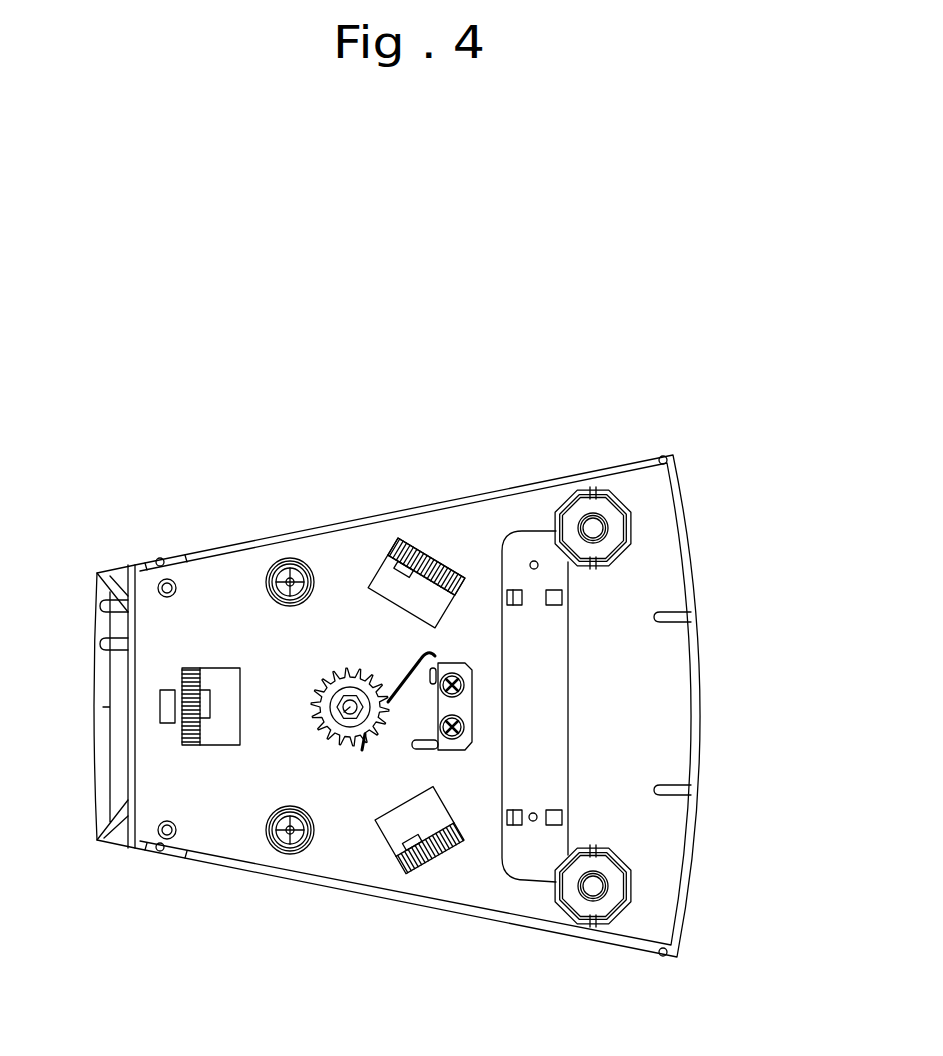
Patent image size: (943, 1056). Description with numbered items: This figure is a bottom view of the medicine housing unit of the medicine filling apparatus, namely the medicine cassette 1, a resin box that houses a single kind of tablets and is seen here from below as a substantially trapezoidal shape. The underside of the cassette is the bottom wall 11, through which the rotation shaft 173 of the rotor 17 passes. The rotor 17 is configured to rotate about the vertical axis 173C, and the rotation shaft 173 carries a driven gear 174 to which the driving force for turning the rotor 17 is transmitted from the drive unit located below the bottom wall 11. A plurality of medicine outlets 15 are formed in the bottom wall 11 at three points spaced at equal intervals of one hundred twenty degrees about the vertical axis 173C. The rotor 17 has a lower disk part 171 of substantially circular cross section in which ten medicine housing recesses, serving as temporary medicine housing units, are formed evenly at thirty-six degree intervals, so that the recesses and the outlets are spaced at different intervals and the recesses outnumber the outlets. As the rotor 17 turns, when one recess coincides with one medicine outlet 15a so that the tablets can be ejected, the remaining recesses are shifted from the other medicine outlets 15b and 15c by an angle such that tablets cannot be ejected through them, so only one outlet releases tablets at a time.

The medicine cassette 1 is at (681, 424).
The bottom wall 11 is at (650, 703).
The medicine outlets 15 is at (311, 710).
The medicine outlet 15a is at (222, 748).
The medicine outlet 15b is at (447, 538).
The medicine outlet 15c is at (450, 840).
The rotor 17 is at (234, 688).
The lower disk part 171 is at (200, 706).
The rotation shaft 173 is at (333, 742).
The vertical axis 173C is at (351, 703).
The driven gear 174 is at (341, 746).